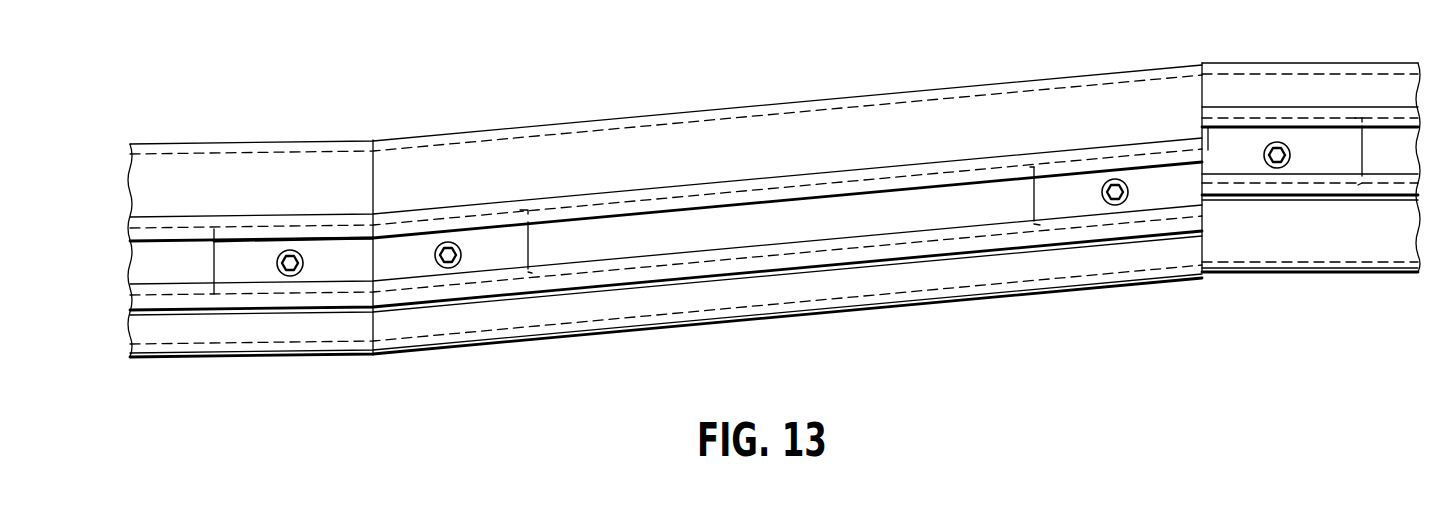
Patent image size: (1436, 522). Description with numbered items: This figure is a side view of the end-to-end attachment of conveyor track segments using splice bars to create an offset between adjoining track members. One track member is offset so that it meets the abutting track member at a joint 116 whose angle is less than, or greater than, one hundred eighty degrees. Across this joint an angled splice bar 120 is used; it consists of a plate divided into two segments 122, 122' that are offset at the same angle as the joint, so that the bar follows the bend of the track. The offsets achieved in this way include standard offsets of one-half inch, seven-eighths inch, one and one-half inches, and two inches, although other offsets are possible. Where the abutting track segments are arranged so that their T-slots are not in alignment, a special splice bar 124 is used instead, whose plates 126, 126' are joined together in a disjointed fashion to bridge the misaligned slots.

The joint 116 is at (373, 140).
The angled splice bar 120 is at (342, 274).
The segment 122 is at (268, 261).
The segment 122' is at (517, 241).
The special splice bar 124 is at (1184, 198).
The plate 126 is at (1046, 196).
The plate 126' is at (1285, 130).